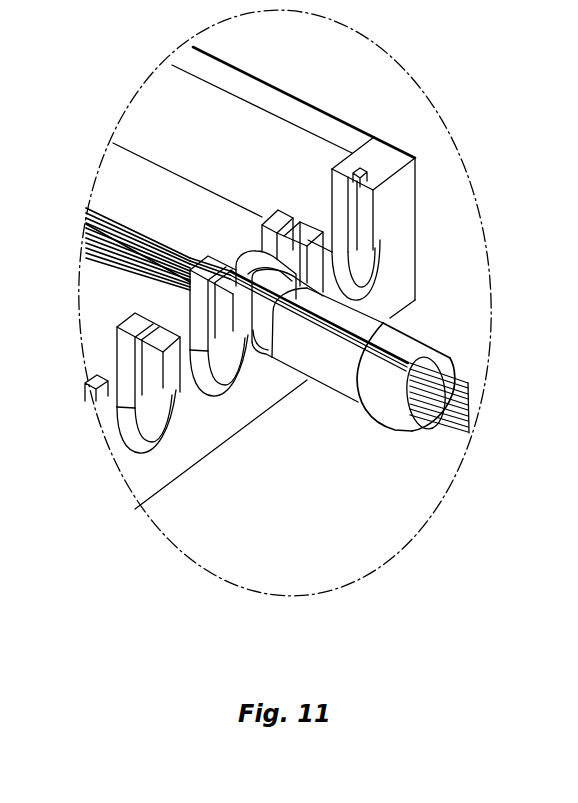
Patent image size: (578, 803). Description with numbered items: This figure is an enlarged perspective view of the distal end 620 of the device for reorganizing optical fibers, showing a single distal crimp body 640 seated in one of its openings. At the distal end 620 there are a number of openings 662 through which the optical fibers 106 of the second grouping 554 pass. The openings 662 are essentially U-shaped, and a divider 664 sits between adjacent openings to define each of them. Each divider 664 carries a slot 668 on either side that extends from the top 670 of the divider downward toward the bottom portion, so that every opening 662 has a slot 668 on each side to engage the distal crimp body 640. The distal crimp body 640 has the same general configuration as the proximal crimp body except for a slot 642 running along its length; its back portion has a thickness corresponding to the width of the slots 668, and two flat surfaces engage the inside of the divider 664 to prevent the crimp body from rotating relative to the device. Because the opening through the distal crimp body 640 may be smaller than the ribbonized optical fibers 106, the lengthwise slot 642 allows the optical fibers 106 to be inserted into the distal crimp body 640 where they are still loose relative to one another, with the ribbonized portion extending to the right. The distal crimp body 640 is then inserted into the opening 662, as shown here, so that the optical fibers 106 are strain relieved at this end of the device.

The optical fibers 106 is at (470, 404).
The second grouping 554 is at (427, 332).
The distal end 620 is at (137, 488).
The distal crimp body 640 is at (317, 377).
The slot 642 is at (366, 398).
The openings 662 is at (367, 268).
The divider 664 is at (168, 365).
The slot 668 is at (358, 172).
The top 670 is at (280, 218).